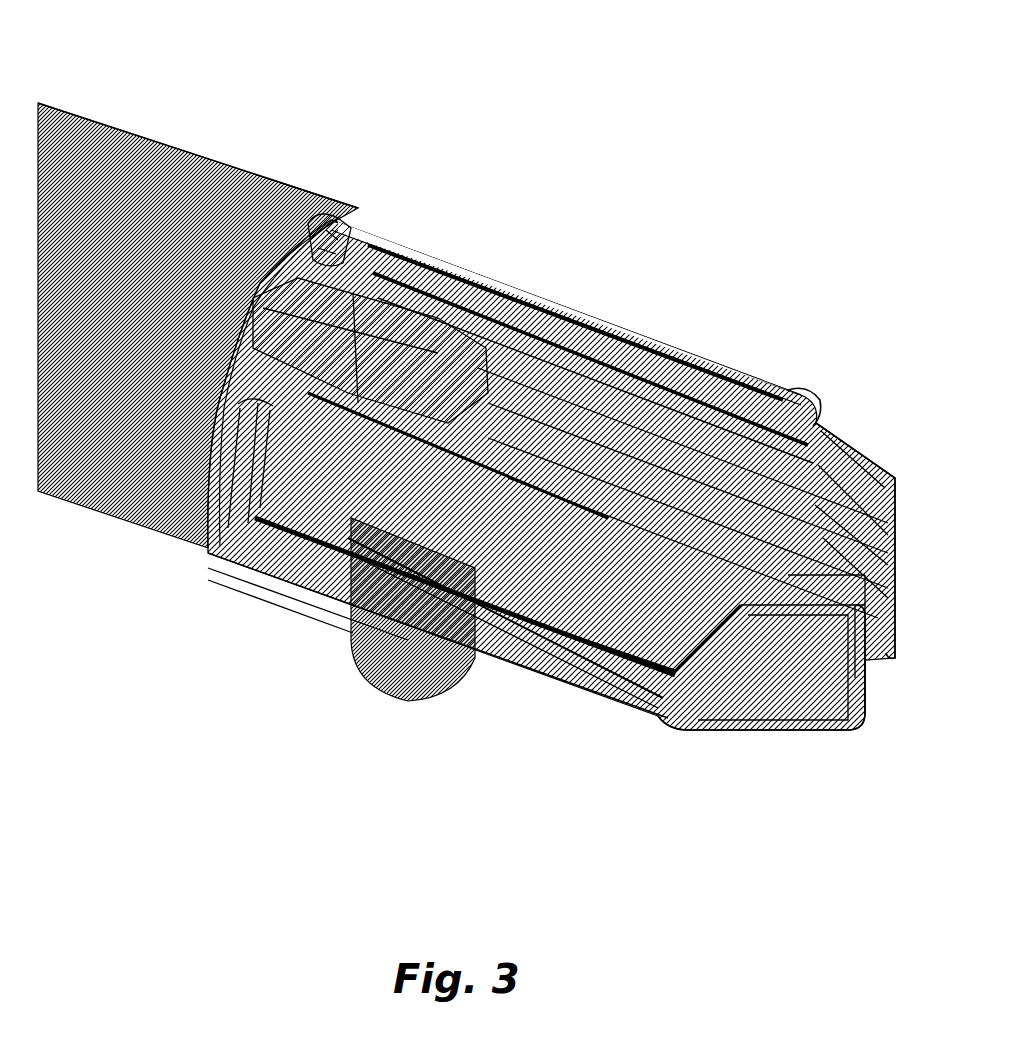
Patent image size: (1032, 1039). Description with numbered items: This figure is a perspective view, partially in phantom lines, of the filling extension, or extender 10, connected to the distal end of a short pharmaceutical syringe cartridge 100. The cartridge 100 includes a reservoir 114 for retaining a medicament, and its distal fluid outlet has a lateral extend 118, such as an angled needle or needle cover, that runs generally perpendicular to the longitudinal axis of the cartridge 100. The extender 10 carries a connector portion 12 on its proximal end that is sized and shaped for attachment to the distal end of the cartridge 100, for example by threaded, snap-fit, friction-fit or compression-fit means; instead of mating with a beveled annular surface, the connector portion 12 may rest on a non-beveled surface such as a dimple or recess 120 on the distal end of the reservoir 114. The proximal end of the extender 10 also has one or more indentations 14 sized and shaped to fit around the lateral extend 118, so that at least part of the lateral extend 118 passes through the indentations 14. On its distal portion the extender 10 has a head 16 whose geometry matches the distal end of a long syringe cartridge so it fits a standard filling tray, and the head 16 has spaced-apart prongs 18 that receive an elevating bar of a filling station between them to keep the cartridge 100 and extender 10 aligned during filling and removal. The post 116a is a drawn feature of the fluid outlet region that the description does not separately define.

The filling extension (extender) 10 is at (605, 300).
The connector portion 12 is at (327, 213).
The indentation 14 is at (440, 330).
The head 16 is at (797, 383).
The prongs 18 is at (877, 470).
The pharmaceutical syringe cartridge 100 is at (62, 100).
The reservoir 114 is at (162, 148).
The cylindrical post 116a is at (422, 683).
The lateral extend 118 is at (407, 450).
The dimple or recess 120 is at (257, 407).